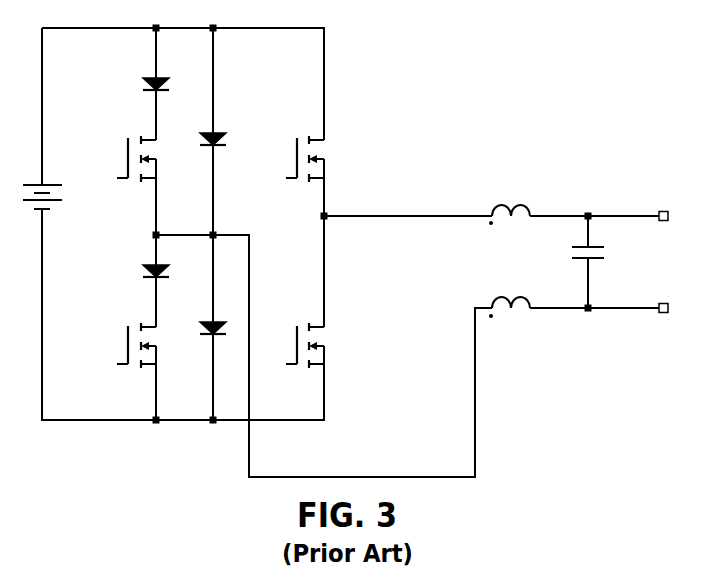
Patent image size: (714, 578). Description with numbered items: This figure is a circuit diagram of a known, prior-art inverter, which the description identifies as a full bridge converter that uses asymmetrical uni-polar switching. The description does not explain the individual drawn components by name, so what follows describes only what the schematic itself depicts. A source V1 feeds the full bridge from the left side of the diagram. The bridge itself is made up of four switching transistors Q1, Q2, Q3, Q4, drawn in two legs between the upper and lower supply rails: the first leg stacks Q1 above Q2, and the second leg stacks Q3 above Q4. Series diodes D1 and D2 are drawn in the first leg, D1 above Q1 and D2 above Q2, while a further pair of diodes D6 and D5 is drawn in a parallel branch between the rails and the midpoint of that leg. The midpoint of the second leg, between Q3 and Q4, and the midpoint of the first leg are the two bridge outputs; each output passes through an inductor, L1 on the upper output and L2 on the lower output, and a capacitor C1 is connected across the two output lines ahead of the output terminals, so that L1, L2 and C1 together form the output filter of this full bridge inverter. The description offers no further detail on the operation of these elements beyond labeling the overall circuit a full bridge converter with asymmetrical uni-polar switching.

The voltage source V1 is at (53, 184).
The diode D1 is at (168, 78).
The diode D2 is at (168, 265).
The diode D5 is at (200, 321).
The diode D6 is at (200, 132).
The transistor Q1 is at (136, 167).
The transistor Q2 is at (136, 355).
The transistor Q3 is at (305, 167).
The transistor Q4 is at (305, 355).
The inductor L1 is at (509, 225).
The inductor L2 is at (509, 316).
The capacitor C1 is at (599, 247).